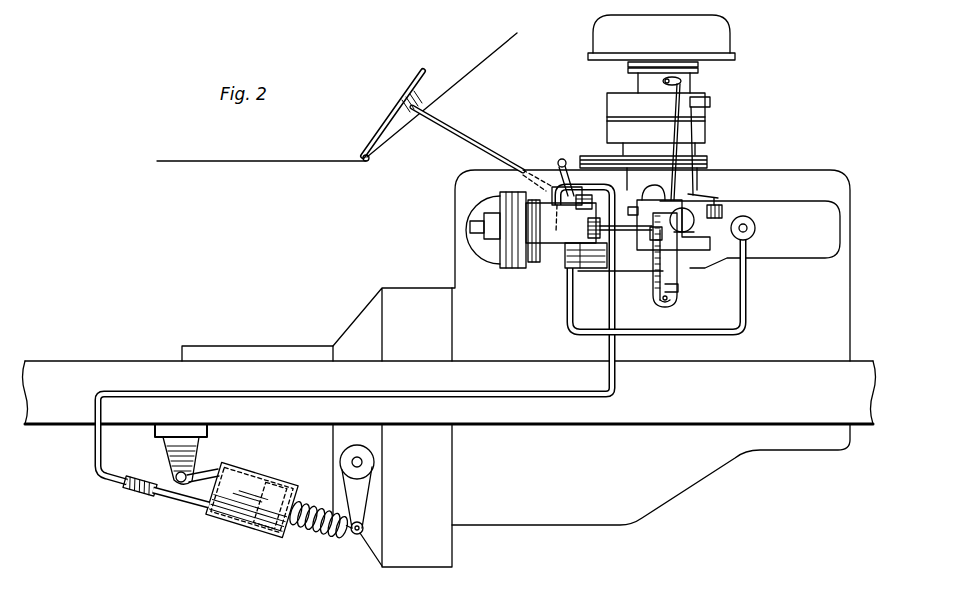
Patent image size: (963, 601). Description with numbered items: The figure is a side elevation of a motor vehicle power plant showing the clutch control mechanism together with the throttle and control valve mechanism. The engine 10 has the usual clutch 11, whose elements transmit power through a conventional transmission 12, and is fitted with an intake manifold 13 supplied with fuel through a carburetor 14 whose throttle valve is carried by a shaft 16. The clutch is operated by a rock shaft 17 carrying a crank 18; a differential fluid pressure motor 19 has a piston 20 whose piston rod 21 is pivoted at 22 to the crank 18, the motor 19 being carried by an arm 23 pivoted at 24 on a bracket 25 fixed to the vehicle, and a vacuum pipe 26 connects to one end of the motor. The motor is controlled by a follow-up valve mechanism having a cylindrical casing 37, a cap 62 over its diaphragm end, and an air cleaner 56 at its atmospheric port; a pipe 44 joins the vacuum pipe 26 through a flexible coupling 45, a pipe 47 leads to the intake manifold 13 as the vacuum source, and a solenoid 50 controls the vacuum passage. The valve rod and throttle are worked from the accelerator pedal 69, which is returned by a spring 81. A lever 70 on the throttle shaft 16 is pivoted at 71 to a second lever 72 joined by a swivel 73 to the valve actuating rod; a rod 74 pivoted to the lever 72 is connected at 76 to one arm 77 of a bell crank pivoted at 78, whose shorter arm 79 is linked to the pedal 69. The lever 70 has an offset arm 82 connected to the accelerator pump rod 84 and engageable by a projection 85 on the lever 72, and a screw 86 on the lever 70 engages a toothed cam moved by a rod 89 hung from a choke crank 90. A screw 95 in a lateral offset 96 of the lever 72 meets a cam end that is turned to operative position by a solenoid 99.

The motor vehicle engine 10 is at (794, 169).
The clutch 11 is at (394, 279).
The transmission 12 is at (264, 345).
The intake manifold 13 is at (824, 200).
The carburetor 14 is at (607, 134).
The throttle shaft 16 is at (683, 231).
The rock shaft 17 is at (363, 462).
The crank 18 is at (362, 493).
The differential fluid pressure motor 19 is at (262, 468).
The piston 20 is at (289, 478).
The piston rod 21 is at (347, 540).
The pivot 22 is at (356, 535).
The arm 23 is at (205, 487).
The pivot 24 is at (162, 472).
The bracket 25 is at (168, 432).
The vacuum pipe 26 is at (182, 500).
The cylindrical casing 37 is at (539, 245).
The pipe 44 is at (605, 398).
The flexible coupling 45 is at (136, 497).
The pipe 47 is at (730, 337).
The solenoid 50 is at (566, 293).
The air cleaner 56 is at (586, 196).
The cap 62 is at (490, 256).
The accelerator pedal 69 is at (386, 126).
The lever 70 is at (680, 300).
The pivot pin 71 is at (668, 306).
The second lever 72 is at (653, 256).
The swivel 73 is at (650, 236).
The rod 74 is at (634, 273).
The connection 76 is at (586, 270).
The bell crank arm 77 is at (572, 186).
The bell crank pivot 78 is at (559, 160).
The shorter arm 79 is at (556, 176).
The spring 81 is at (420, 98).
The offset arm 82 is at (691, 226).
The rod 84 is at (708, 154).
The projection 85 is at (679, 287).
The screw 86 is at (659, 190).
The rod 89 is at (672, 136).
The crank 90 is at (668, 87).
The screw 95 is at (647, 210).
The lateral offset 96 is at (702, 192).
The solenoid 99 is at (724, 209).